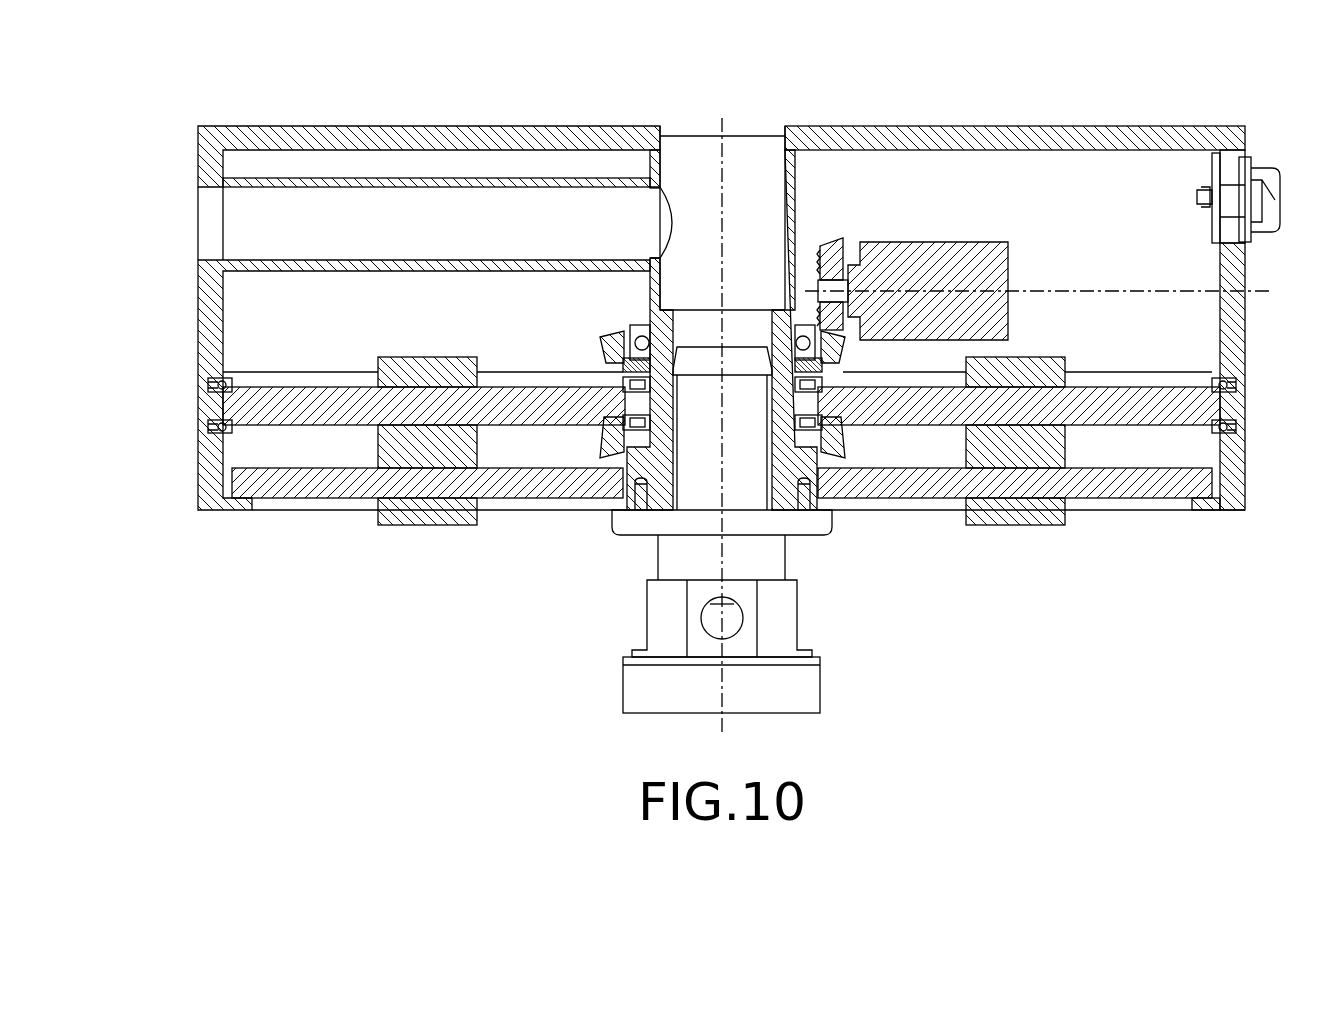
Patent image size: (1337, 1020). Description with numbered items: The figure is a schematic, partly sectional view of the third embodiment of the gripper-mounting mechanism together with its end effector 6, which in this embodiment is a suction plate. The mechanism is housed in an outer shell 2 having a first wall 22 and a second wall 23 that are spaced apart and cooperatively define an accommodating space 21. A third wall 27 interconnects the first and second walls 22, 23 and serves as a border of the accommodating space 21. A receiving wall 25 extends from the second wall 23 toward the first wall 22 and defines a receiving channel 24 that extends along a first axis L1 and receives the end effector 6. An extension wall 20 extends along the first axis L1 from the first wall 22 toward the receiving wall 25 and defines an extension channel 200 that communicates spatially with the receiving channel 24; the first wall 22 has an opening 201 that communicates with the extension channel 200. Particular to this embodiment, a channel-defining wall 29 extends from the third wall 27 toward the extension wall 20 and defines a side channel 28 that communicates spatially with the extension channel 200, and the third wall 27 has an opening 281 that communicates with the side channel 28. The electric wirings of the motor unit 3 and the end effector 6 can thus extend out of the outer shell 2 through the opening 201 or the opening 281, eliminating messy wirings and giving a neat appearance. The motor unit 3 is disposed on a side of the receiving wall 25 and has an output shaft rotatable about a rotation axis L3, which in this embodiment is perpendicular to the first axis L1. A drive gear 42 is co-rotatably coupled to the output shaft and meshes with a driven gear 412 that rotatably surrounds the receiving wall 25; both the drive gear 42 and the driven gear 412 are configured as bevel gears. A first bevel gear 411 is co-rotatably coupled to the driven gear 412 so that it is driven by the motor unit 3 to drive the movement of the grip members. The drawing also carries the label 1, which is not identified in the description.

The machine base 1 is at (739, 618).
The outer shell 2 is at (450, 122).
The extension wall 20 is at (793, 200).
The extension channel 200 is at (770, 187).
The opening 201 is at (675, 130).
The accommodating space 21 is at (262, 306).
The first wall 22 is at (293, 126).
The second wall 23 is at (234, 506).
The receiving channel 24 is at (704, 318).
The receiving wall 25 is at (657, 482).
The third wall 27 is at (203, 318).
The side channel 28 is at (327, 230).
The opening 281 is at (216, 223).
The channel-defining wall 29 is at (383, 182).
The motor unit 3 is at (966, 232).
The first bevel gear 411 is at (603, 350).
The driven gear 412 is at (815, 330).
The drive gear 42 is at (820, 328).
The end effector 6 is at (827, 657).
The first axis L1 is at (721, 444).
The rotation axis L3 is at (1057, 292).